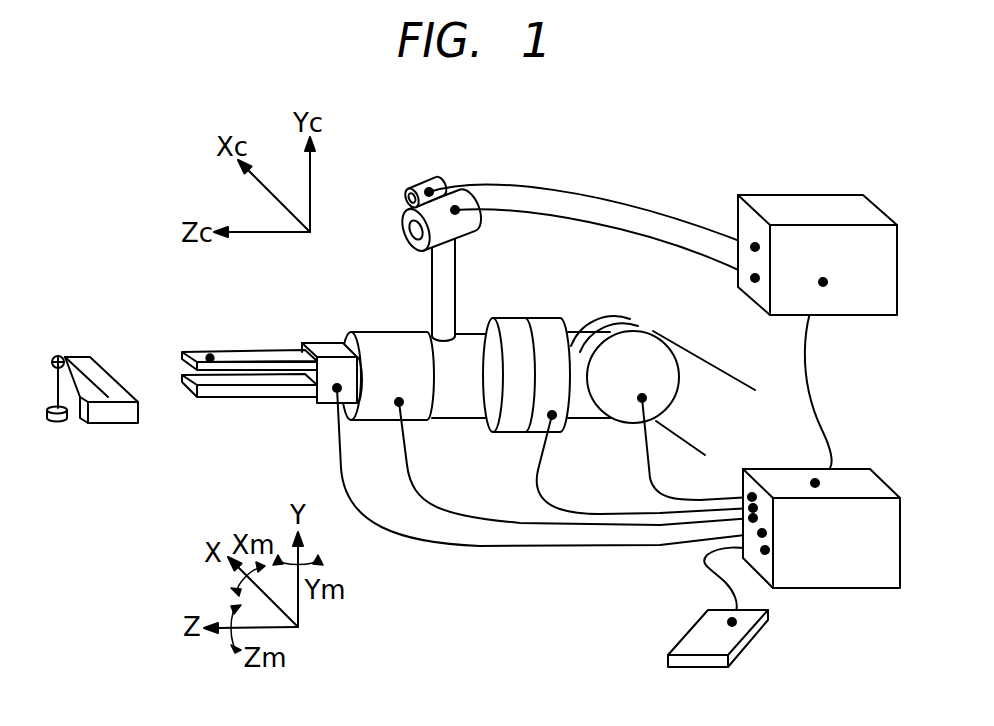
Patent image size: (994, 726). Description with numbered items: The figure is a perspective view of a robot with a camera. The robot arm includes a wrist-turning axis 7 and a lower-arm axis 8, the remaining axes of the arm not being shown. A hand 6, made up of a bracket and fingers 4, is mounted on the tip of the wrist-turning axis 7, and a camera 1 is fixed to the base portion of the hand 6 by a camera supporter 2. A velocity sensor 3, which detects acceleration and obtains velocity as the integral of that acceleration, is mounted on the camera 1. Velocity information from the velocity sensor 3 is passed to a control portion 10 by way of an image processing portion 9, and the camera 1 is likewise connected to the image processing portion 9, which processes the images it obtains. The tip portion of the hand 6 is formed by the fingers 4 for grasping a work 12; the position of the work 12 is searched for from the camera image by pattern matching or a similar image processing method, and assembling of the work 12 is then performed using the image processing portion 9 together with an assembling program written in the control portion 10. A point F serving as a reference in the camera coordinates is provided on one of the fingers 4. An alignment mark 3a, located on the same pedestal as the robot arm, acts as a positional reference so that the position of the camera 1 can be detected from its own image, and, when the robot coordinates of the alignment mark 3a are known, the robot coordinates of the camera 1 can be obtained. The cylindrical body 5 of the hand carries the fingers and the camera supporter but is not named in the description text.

The camera 1 is at (462, 227).
The camera supporter 2 is at (457, 288).
The velocity sensor 3 is at (437, 182).
The alignment mark 3a is at (60, 355).
The fingers 4 is at (252, 349).
The hand body 5 is at (381, 331).
The hand 6 is at (205, 432).
The J7 axis 7 is at (517, 427).
The J6 axis 8 is at (622, 415).
The image processing portion 9 is at (866, 304).
The control portion 10 is at (852, 579).
The work 12 is at (117, 418).
The point F is at (210, 356).